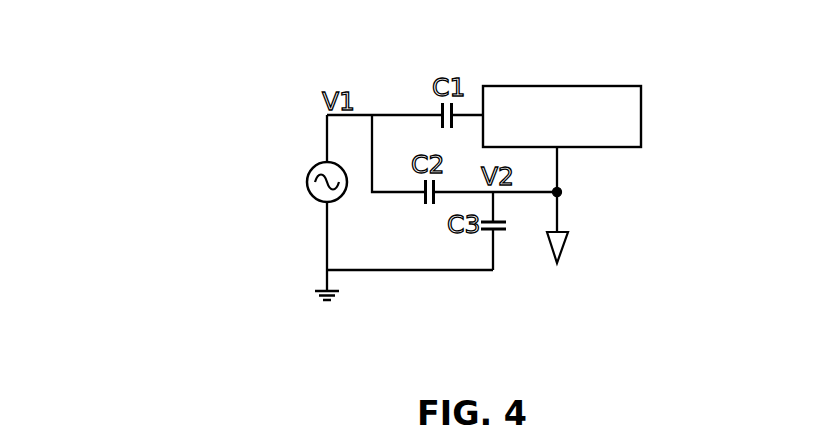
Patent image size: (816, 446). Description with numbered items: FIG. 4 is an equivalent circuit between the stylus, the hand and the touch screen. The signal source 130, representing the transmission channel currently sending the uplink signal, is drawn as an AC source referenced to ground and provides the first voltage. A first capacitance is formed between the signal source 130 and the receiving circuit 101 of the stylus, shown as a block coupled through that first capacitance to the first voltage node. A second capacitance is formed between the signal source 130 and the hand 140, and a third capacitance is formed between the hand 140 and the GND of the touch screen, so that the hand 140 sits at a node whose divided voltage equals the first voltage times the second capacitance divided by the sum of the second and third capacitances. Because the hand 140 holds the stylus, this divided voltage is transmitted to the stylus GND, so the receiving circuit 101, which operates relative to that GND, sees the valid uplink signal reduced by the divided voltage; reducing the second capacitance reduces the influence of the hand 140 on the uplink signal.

The receiving circuit 101 is at (641, 115).
The signal source 130 is at (303, 183).
The hand 140 is at (572, 180).